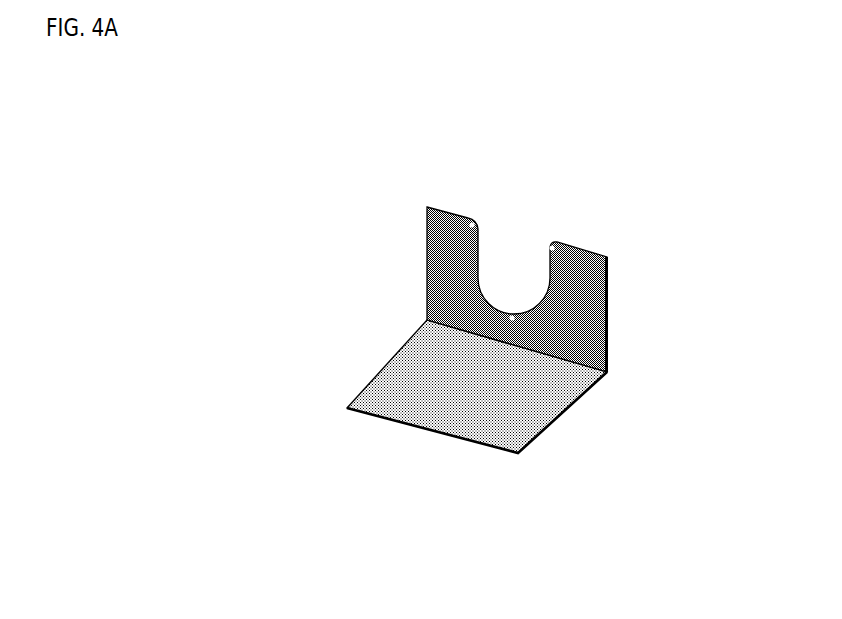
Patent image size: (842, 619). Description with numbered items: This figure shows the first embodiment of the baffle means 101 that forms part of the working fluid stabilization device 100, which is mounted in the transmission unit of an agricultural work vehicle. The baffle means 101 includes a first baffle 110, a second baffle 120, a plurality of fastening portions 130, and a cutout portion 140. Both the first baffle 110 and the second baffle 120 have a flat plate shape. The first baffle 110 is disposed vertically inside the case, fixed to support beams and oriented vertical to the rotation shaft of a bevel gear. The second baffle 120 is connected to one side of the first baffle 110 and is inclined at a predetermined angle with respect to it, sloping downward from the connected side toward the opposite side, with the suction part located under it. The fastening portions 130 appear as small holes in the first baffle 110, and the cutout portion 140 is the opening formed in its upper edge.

The working fluid stabilization device 100 is at (418, 200).
The baffle means 101 is at (528, 327).
The first baffle 110 is at (607, 288).
The second baffle 120 is at (567, 395).
The fastening portions 130 is at (550, 244).
The cutout portion 140 is at (473, 273).